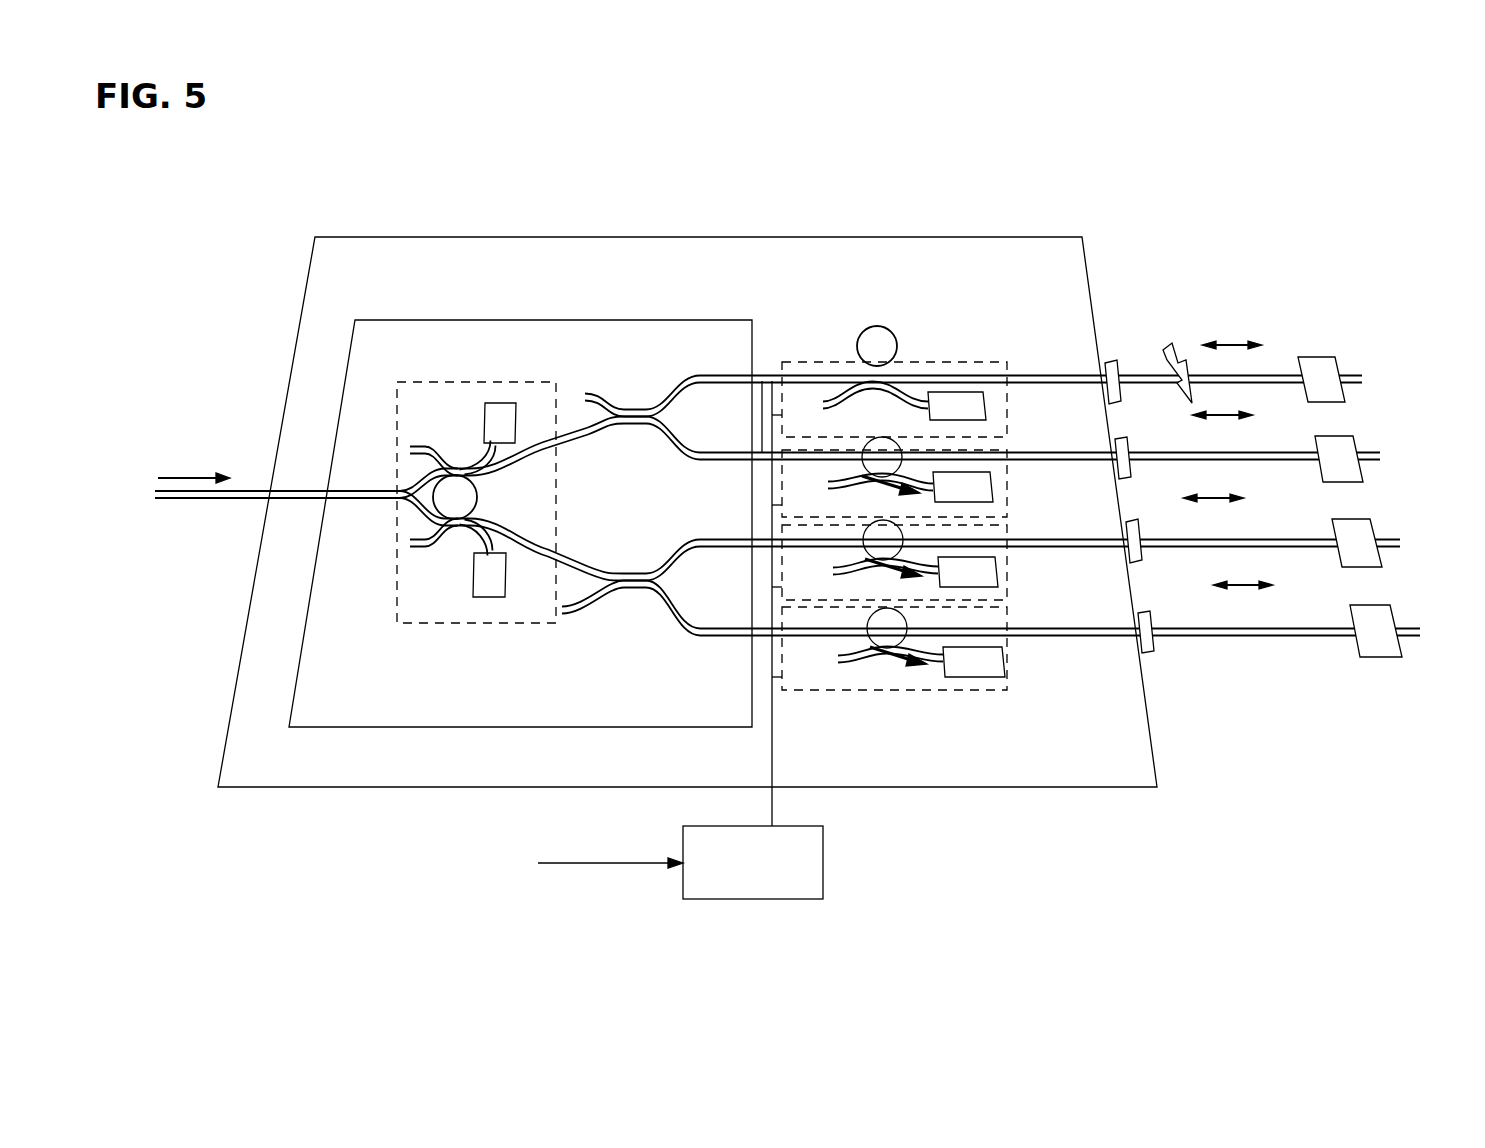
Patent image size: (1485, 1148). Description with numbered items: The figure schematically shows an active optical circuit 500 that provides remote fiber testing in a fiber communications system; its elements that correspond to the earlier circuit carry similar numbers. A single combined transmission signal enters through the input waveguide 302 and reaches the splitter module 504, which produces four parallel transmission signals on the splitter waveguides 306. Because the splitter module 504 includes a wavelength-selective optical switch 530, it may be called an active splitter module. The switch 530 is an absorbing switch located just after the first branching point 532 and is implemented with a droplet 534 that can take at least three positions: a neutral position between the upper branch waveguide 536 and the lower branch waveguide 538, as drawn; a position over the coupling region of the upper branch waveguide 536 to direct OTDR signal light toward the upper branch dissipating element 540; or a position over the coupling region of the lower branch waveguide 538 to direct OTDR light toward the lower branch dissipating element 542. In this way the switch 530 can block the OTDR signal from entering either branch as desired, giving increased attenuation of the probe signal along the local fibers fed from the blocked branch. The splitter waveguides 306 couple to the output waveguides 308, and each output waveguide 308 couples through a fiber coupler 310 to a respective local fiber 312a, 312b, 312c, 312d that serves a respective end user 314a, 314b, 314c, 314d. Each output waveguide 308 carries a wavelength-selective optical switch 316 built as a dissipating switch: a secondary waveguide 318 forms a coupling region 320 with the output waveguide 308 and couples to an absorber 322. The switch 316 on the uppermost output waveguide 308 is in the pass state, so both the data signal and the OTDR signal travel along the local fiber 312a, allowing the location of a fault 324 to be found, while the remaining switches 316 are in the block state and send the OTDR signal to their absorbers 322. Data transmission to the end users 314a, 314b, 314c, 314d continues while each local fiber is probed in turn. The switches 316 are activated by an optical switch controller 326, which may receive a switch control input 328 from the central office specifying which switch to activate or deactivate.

The optical circuit 500 is at (700, 145).
The splitter module 504 is at (405, 318).
The input waveguide 302 is at (203, 500).
The first branching point 532 is at (387, 490).
The droplet 534 is at (457, 483).
The upper branch waveguide 536 is at (533, 458).
The lower branch waveguide 538 is at (423, 513).
The upper branch dissipating element 540 is at (515, 402).
The lower branch dissipating element 542 is at (486, 597).
The wavelength-selective optical switch 530 is at (428, 625).
The splitter waveguides 306 is at (733, 391).
The output waveguides 308 is at (1042, 375).
The fiber coupler 310 is at (1114, 403).
The local fiber 312a is at (1287, 375).
The local fiber 312b is at (1297, 453).
The local fiber 312c is at (1310, 538).
The local fiber 312d is at (1327, 628).
The end user 314a is at (1338, 362).
The end user 314b is at (1357, 443).
The end user 314c is at (1373, 525).
The end user 314d is at (1397, 615).
The wavelength-selective optical switch 316 is at (1007, 408).
The secondary waveguide 318 is at (845, 392).
The coupling region 320 is at (873, 385).
The absorber 322 is at (982, 392).
The fault 324 is at (1178, 360).
The optical switch controller 326 is at (733, 883).
The switch control input 328 is at (610, 865).